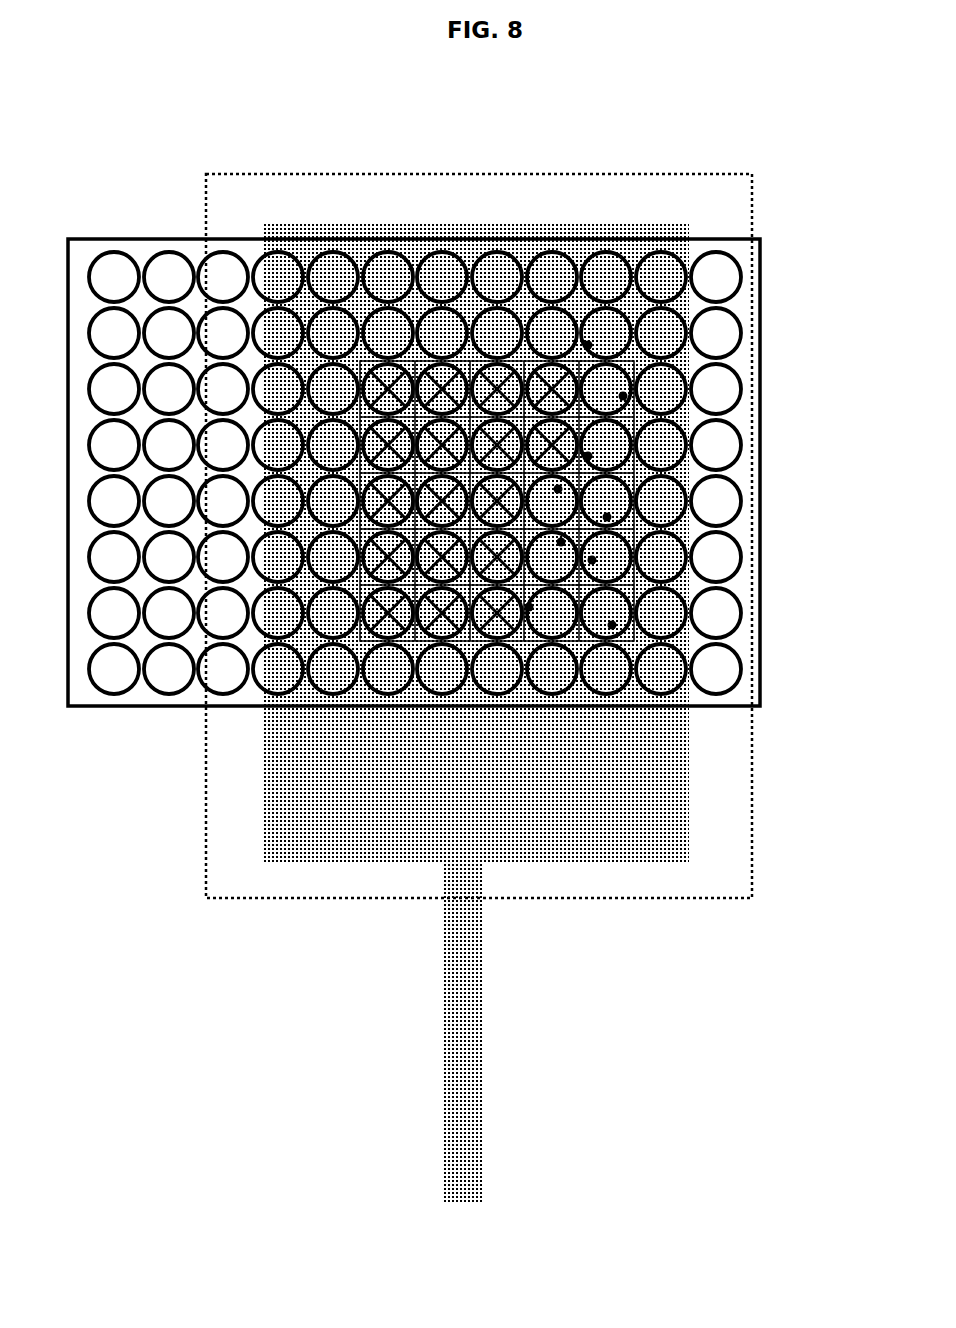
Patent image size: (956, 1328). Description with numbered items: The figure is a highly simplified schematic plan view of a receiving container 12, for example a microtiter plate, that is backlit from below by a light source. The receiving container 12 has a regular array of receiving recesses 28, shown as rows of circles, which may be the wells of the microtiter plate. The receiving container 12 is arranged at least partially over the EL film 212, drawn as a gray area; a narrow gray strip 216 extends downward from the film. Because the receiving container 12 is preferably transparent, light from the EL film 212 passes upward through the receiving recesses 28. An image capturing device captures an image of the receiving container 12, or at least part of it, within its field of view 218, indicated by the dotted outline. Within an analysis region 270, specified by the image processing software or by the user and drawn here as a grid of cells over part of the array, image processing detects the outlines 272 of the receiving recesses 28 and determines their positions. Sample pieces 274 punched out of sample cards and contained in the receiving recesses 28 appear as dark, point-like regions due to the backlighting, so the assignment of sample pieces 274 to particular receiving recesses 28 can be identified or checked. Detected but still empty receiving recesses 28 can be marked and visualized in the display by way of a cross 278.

The receiving container 12 is at (705, 708).
The receiving recesses 28 is at (220, 267).
The EL film 212 is at (690, 812).
The connector tail 216 is at (482, 1025).
The field of view 218 is at (708, 898).
The analysis region 270 is at (360, 642).
The outlines 272 is at (585, 462).
The sample pieces 274 is at (623, 396).
The cross 278 is at (440, 372).